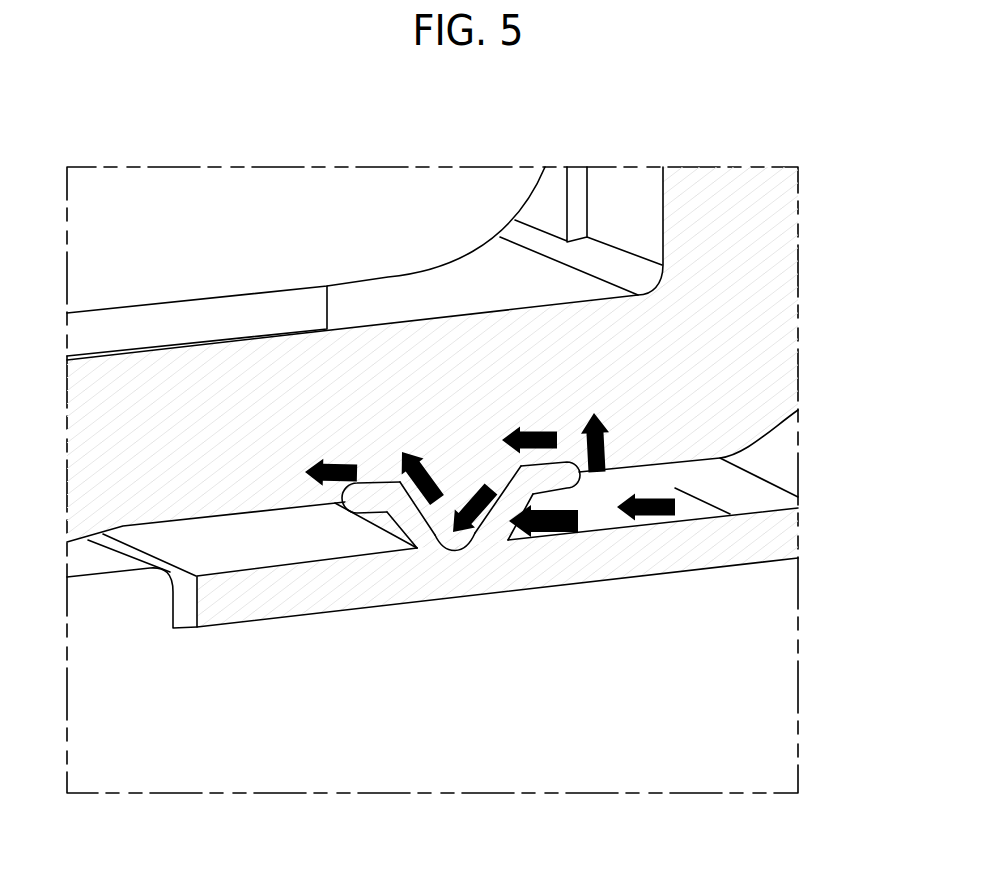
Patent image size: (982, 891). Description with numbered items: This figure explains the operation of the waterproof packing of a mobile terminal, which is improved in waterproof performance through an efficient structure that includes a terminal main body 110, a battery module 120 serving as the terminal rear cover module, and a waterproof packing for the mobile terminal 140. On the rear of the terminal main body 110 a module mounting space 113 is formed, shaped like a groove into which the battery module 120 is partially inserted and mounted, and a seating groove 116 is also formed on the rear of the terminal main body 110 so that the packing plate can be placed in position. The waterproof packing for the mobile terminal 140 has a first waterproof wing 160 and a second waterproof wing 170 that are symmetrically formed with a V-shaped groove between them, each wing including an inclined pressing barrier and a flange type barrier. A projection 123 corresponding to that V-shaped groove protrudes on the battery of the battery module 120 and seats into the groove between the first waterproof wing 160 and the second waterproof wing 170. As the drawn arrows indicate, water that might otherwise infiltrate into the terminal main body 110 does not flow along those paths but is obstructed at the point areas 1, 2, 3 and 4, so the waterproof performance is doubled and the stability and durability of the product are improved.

The terminal main body 110 is at (494, 802).
The module mounting space 113 is at (730, 482).
The seating groove 116 is at (185, 622).
The battery module 120 is at (715, 160).
The projection 123 is at (458, 546).
The waterproof packing for the mobile terminal 140 is at (325, 627).
The first waterproof wing 160 is at (592, 480).
The second waterproof wing 170 is at (335, 524).
The point area ① 1 is at (526, 544).
The point area ② 2 is at (584, 497).
The point area ③ 3 is at (495, 545).
The point area ④ 4 is at (434, 552).